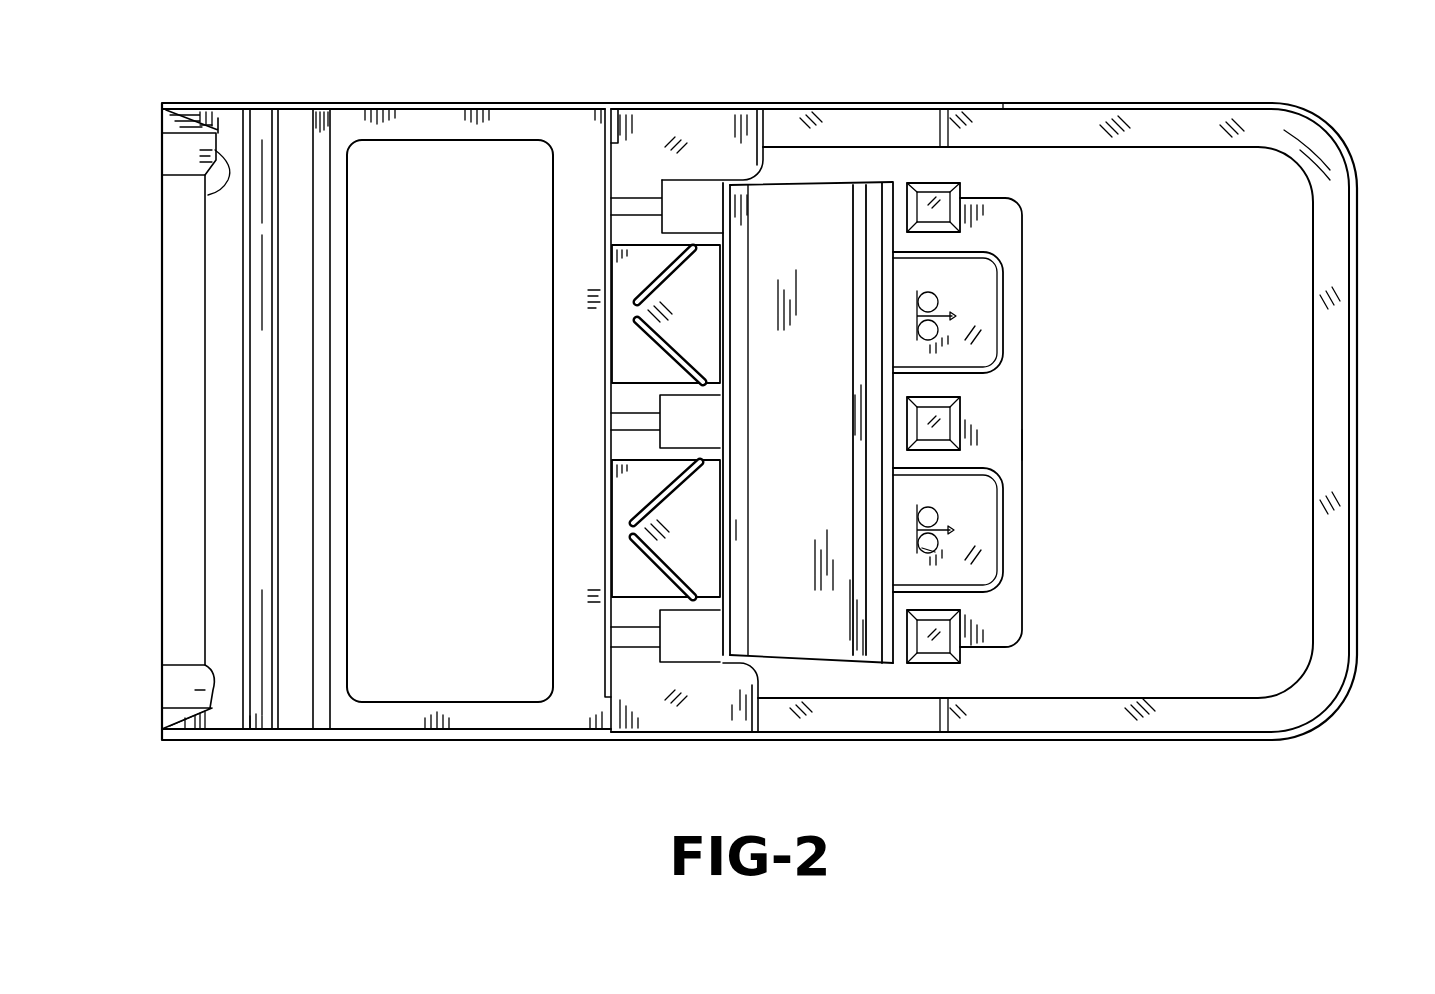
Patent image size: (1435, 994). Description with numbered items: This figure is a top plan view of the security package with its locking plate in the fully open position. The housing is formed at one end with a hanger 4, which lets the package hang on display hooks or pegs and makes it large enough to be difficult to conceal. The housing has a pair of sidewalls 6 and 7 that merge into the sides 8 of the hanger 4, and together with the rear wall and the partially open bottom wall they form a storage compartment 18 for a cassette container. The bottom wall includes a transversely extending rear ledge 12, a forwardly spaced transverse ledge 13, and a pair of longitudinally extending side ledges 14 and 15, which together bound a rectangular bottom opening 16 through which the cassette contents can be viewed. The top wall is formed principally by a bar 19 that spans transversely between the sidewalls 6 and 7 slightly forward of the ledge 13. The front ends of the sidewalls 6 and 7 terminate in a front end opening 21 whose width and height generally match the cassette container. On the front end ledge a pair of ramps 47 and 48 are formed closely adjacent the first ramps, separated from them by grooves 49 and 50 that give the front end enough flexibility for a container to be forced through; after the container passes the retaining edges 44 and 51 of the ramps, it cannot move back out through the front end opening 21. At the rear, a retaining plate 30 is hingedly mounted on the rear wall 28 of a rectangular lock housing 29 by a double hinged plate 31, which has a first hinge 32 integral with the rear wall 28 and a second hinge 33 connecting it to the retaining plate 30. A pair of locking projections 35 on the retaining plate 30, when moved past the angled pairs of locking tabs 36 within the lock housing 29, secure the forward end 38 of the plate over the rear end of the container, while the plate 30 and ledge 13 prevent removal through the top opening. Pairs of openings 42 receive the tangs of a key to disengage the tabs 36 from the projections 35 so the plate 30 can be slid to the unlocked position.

The hanger 4 is at (1362, 410).
The sidewall 6 is at (415, 107).
The sidewall 7 is at (428, 745).
The sides of hanger 8 is at (1128, 105).
The rear ledge 12 is at (580, 397).
The transversely extending ledge 13 is at (343, 330).
The side ledge 14 is at (455, 130).
The side ledge 15 is at (455, 705).
The bottom opening 16 is at (500, 660).
The storage compartment 18 is at (380, 640).
The bar 19 is at (262, 132).
The front end opening 21 is at (222, 600).
The rear wall of lock housing 28 is at (732, 268).
The lock housing 29 is at (697, 99).
The retaining plate 30 is at (995, 410).
The double hinged plate 31 is at (791, 453).
The first hinge 32 is at (735, 540).
The second hinge 33 is at (866, 378).
The locking projection 35 is at (952, 316).
The locking tab 36 is at (648, 300).
The forward end of retaining plate 38 is at (995, 448).
The opening 42 is at (930, 545).
The retaining edge 44 is at (233, 103).
The ramp 47 is at (195, 160).
The ramp 48 is at (183, 690).
The groove 49 is at (205, 128).
The groove 50 is at (210, 712).
The retaining edge 51 is at (212, 193).